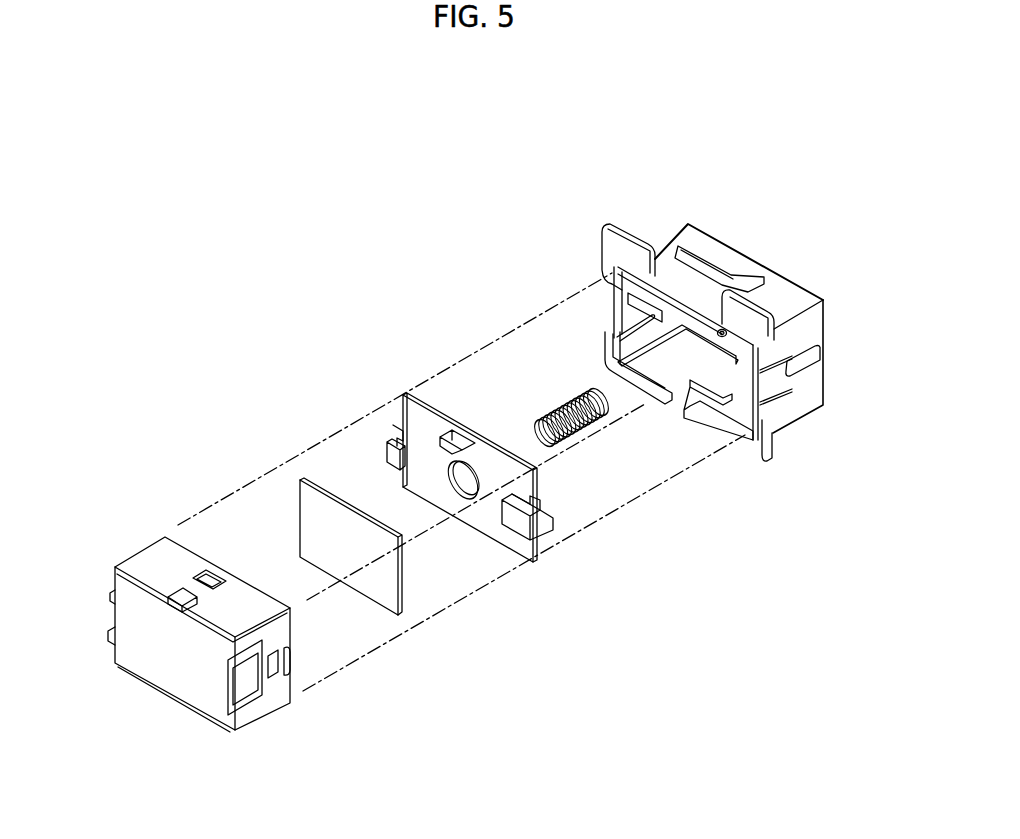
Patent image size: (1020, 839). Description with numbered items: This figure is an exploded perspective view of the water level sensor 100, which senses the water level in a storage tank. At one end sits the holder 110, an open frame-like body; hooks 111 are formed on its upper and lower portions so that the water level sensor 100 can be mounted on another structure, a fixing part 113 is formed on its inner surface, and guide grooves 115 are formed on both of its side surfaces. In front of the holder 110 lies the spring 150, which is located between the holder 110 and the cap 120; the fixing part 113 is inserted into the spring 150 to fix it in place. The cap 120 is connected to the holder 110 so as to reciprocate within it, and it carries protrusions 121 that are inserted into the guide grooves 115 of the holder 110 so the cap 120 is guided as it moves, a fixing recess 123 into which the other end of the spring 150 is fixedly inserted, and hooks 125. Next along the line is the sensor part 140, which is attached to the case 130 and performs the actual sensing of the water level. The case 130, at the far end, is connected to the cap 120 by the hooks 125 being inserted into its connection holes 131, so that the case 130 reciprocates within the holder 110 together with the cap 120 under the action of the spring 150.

The water level sensor 100 is at (490, 100).
The holder 110 is at (645, 226).
The hooks 111 is at (695, 248).
The fixing part 113 is at (720, 334).
The guide grooves 115 is at (795, 368).
The cap 120 is at (374, 431).
The protrusions 121 is at (398, 427).
The fixing recess 123 is at (460, 483).
The hooks 125 is at (392, 458).
The case 130 is at (131, 541).
The connection holes 131 is at (203, 580).
The sensor part 140 is at (294, 483).
The spring 150 is at (556, 407).